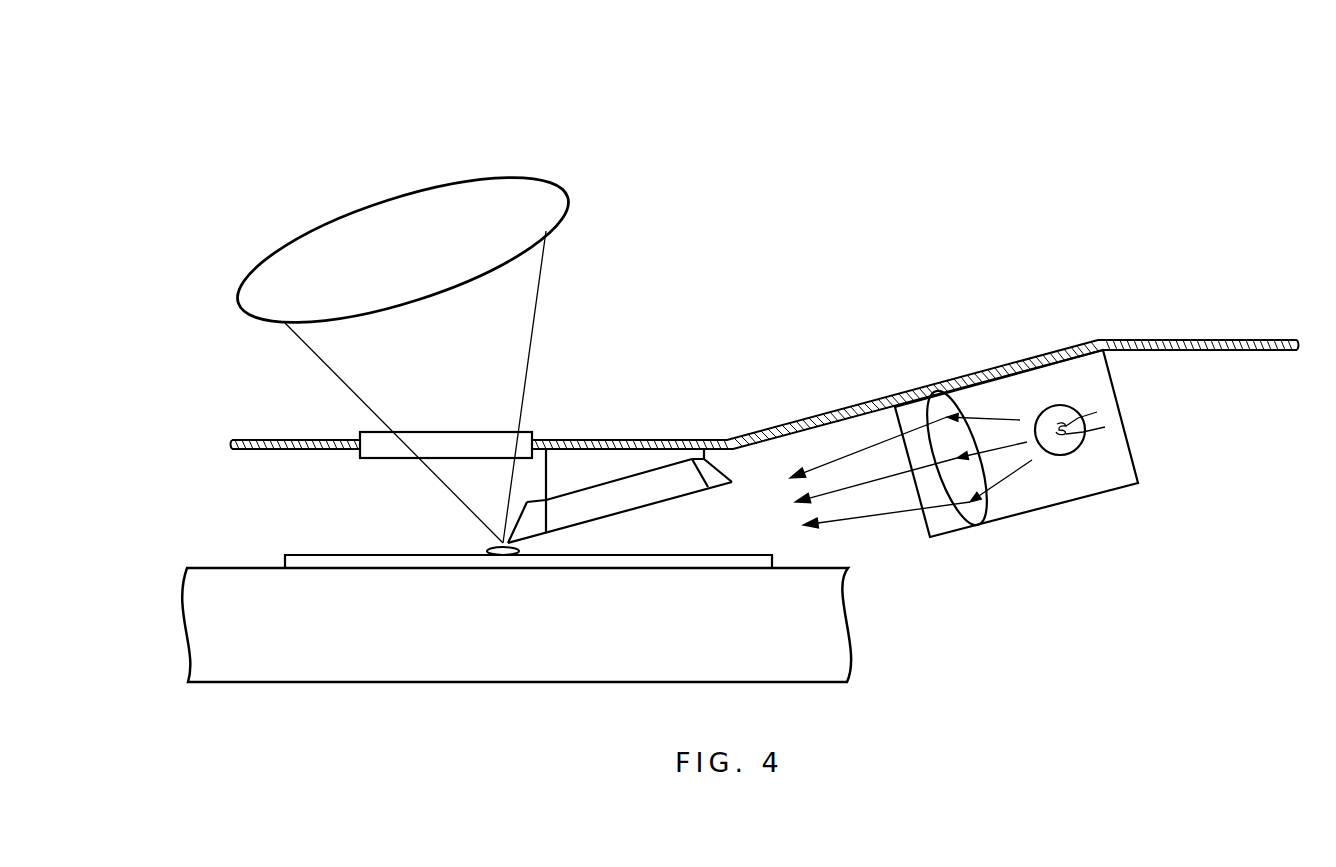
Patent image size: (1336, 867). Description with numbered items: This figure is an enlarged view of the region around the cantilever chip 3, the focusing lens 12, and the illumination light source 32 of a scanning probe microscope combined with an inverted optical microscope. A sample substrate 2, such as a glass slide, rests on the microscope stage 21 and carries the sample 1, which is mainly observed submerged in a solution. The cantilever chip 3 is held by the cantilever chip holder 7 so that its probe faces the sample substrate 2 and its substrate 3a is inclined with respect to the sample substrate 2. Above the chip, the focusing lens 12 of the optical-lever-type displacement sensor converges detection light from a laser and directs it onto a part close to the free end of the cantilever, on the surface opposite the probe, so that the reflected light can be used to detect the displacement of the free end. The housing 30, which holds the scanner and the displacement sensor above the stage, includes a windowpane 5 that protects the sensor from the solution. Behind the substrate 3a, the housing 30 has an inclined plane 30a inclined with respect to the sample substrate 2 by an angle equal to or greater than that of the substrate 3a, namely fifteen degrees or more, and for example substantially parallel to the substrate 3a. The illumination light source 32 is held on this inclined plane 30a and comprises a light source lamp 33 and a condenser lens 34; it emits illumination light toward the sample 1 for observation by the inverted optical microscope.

The sample 1 is at (488, 550).
The sample substrate 2 is at (713, 555).
The microscope stage 21 is at (227, 568).
The cantilever chip 3 is at (620, 469).
The substrate 3a is at (655, 483).
The windowpane 5 is at (375, 458).
The cantilever chip holder 7 is at (597, 458).
The focusing lens 12 is at (527, 182).
The housing 30 is at (765, 370).
The inclined plane 30a is at (843, 408).
The illumination light source 32 is at (1110, 498).
The light source lamp 33 is at (1100, 437).
The condenser lens 34 is at (962, 527).